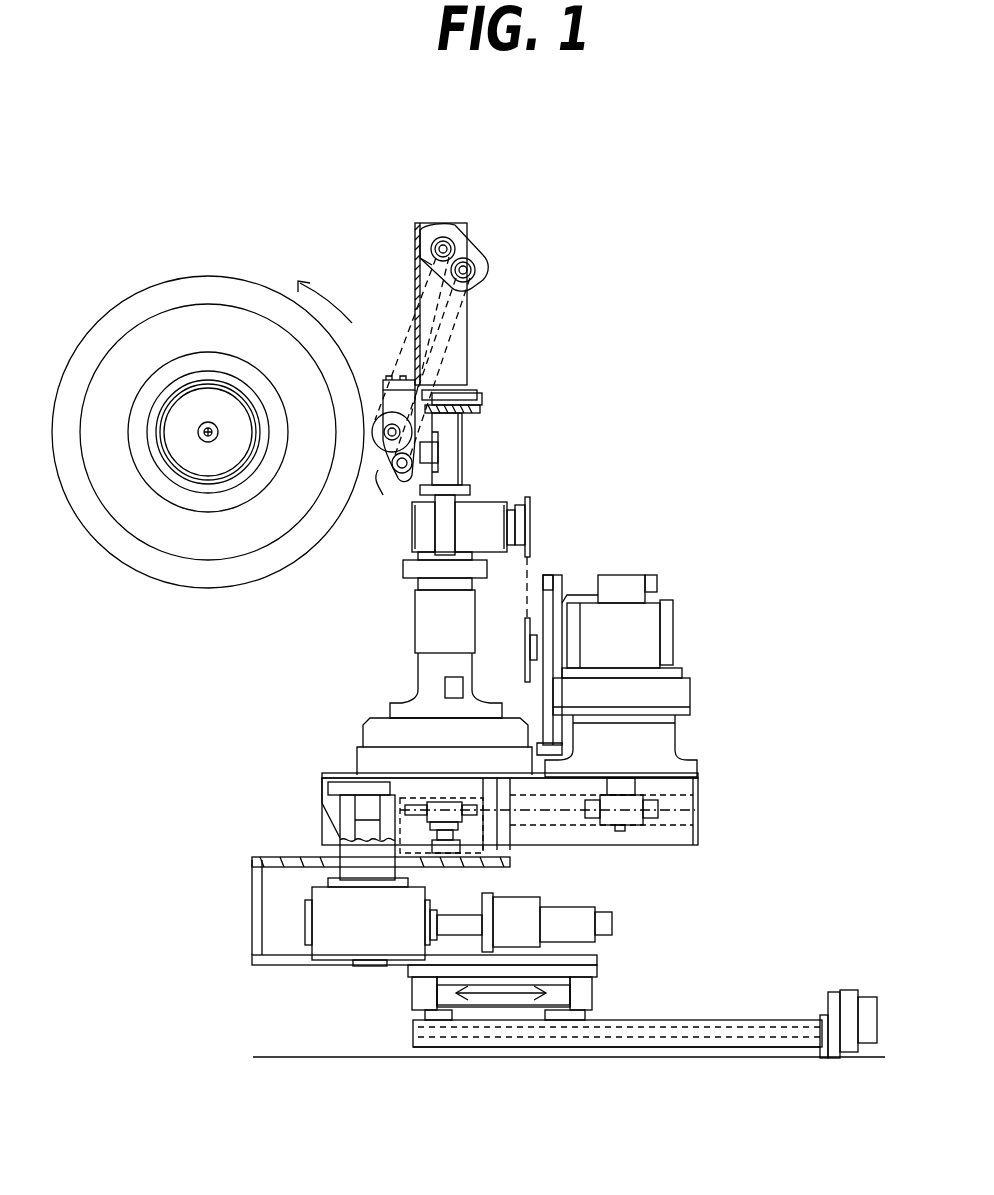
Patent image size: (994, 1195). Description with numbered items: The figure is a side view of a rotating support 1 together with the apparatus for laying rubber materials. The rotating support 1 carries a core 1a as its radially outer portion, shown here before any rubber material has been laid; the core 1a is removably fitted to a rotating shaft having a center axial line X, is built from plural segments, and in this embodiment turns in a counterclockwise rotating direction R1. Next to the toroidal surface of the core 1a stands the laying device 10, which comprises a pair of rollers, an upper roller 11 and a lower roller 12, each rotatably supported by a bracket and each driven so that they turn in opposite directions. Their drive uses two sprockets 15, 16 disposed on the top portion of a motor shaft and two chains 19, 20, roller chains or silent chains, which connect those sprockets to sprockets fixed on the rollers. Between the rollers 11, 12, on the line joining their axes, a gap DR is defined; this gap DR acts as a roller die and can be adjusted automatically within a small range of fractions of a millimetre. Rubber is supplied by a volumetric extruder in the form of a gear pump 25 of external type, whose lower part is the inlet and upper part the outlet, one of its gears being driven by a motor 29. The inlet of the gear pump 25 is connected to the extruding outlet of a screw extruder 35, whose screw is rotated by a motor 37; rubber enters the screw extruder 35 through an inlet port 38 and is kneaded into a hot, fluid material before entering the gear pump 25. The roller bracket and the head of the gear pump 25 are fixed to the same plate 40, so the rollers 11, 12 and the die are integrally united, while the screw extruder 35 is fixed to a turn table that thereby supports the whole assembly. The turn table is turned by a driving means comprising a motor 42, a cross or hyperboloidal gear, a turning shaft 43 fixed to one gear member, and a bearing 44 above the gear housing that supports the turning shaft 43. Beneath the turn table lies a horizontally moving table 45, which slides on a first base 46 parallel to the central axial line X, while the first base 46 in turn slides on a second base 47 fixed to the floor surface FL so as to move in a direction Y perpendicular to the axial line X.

The rotating support 1 is at (208, 392).
The core 1a is at (257, 298).
The center axial line X is at (204, 440).
The rotating direction R1 is at (352, 302).
The laying device 10 is at (500, 410).
The upper roller 11 is at (383, 408).
The lower roller 12 is at (395, 480).
The sprocket 15 is at (433, 250).
The sprocket 16 is at (485, 270).
The roller chain or silent chain 19 is at (415, 335).
The roller chain or silent chain 20 is at (467, 340).
The gear pump 25 is at (463, 518).
The motor 29 is at (668, 645).
The screw extruder 35 is at (413, 623).
The motor 37 is at (605, 610).
The inlet port 38 is at (448, 688).
The plate 40 is at (398, 410).
The gap DR is at (378, 470).
The motor 42 is at (575, 912).
The turning shaft 43 is at (352, 917).
The bearing 44 is at (335, 810).
The horizontally moving table 45 is at (605, 965).
The first base 46 is at (420, 998).
The second base 47 is at (425, 1030).
The floor surface FL is at (290, 1057).
The direction Y is at (505, 995).